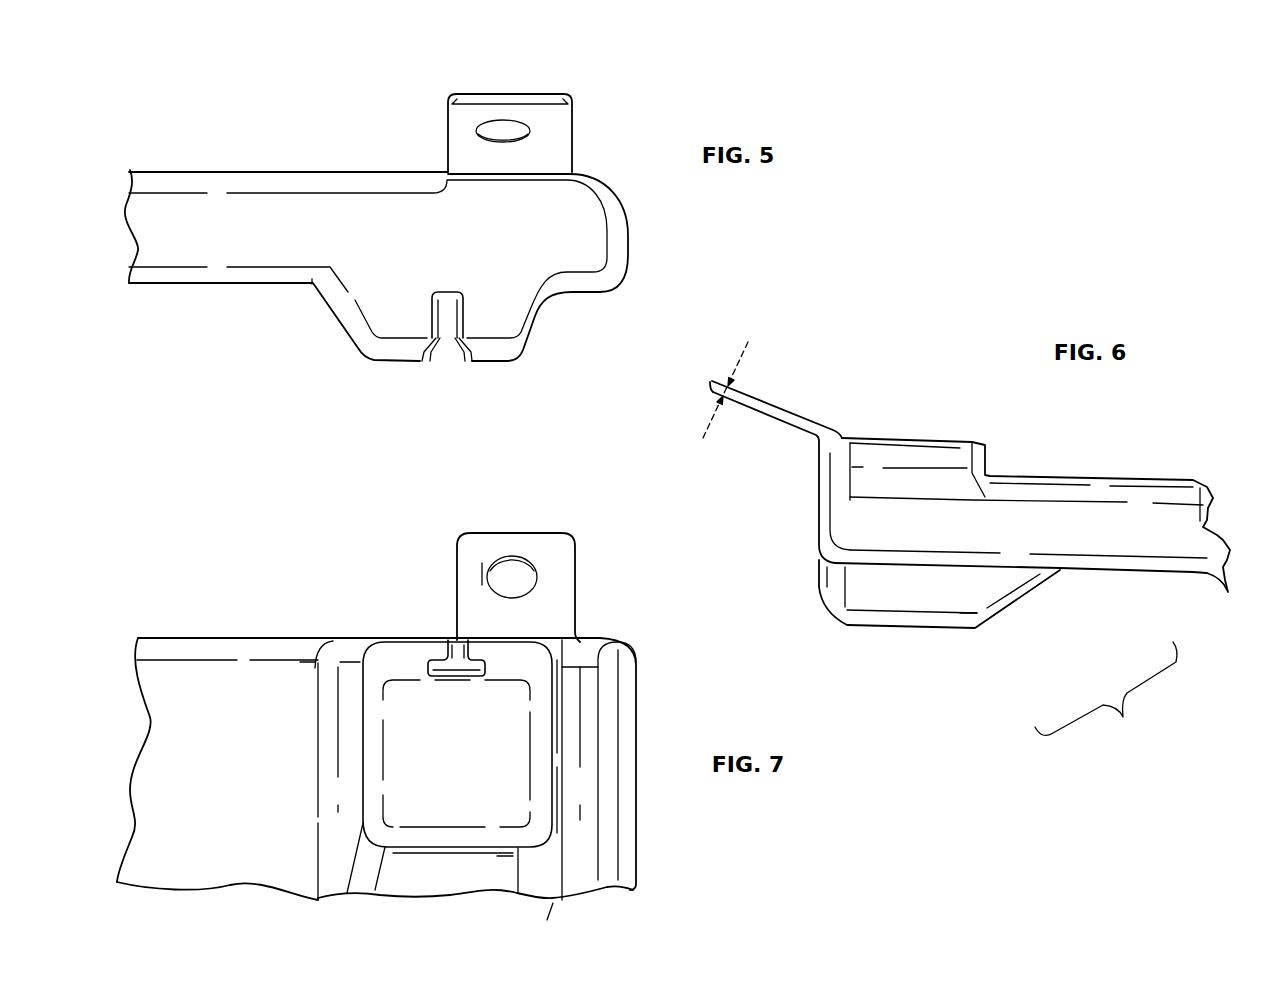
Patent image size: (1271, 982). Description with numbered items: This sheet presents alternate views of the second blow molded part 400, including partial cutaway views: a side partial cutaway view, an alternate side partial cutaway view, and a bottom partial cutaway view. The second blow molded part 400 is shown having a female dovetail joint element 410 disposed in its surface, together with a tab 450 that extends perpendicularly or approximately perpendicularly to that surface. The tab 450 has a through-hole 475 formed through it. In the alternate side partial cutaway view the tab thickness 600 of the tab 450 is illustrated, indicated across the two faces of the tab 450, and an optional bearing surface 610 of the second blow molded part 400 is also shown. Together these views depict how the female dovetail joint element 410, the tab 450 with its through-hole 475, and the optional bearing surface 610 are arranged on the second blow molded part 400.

In FIG. 5, the second blow molded part 400 is at (166, 336).
In FIG. 7, the second blow molded part 400 is at (83, 658).
In FIG. 6, the second blow molded part 400 is at (1106, 697).
In FIG. 5, the female dovetail joint element 410 is at (450, 362).
In FIG. 7, the female dovetail joint element 410 is at (455, 657).
In FIG. 5, the tab 450 is at (469, 118).
In FIG. 7, the tab 450 is at (470, 567).
In FIG. 6, the tab 450 is at (785, 407).
In FIG. 5, the through-hole 475 is at (503, 130).
In FIG. 7, the through-hole 475 is at (510, 577).
In FIG. 6, the tab thickness 600 is at (740, 355).
In FIG. 6, the bearing surface 610 is at (903, 437).